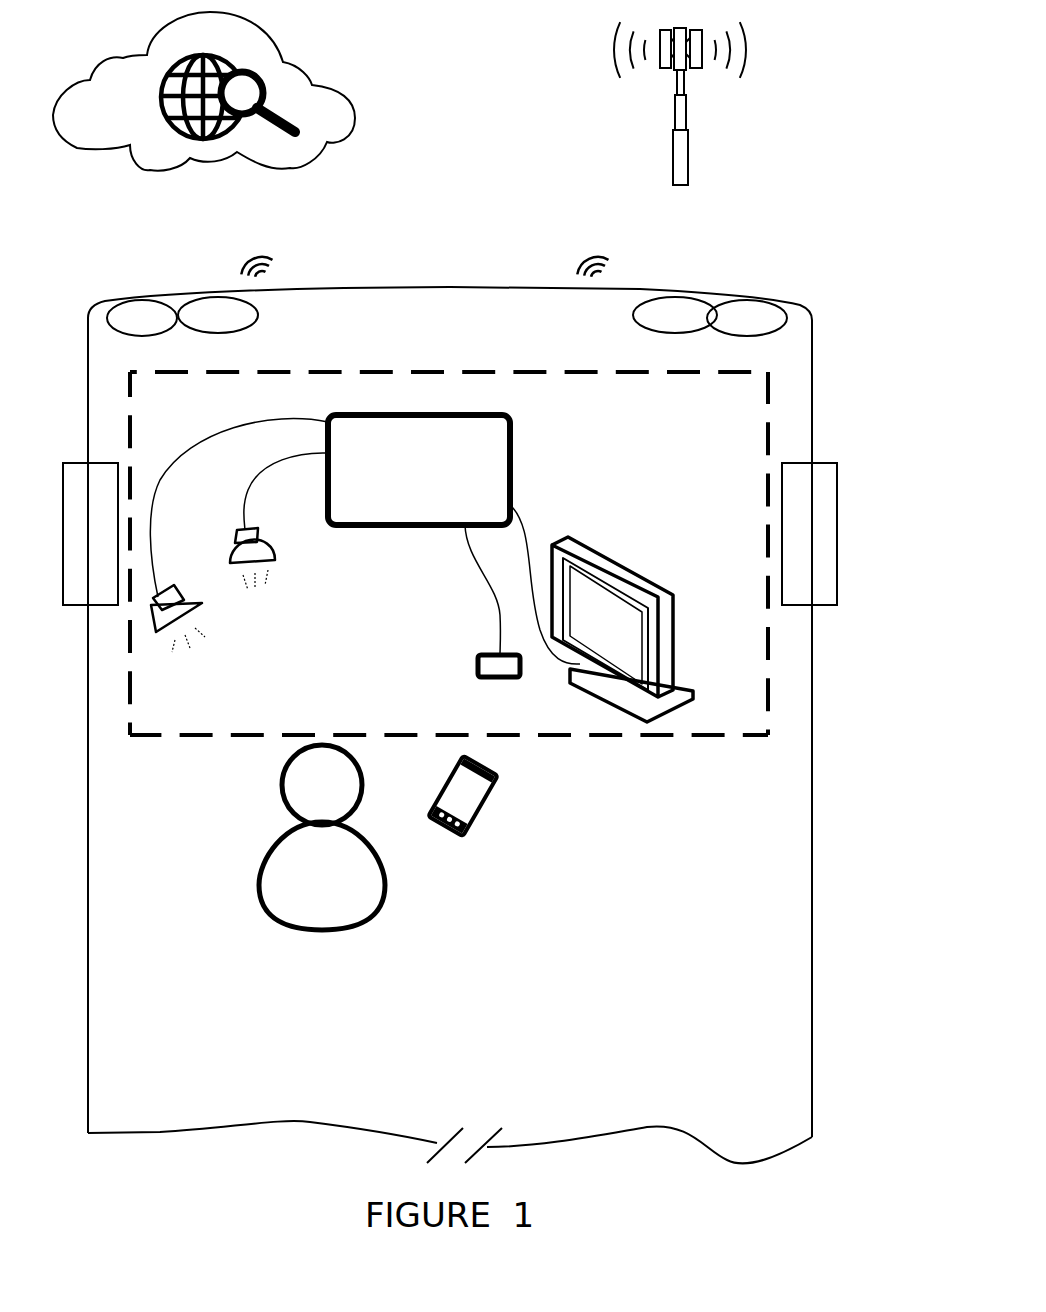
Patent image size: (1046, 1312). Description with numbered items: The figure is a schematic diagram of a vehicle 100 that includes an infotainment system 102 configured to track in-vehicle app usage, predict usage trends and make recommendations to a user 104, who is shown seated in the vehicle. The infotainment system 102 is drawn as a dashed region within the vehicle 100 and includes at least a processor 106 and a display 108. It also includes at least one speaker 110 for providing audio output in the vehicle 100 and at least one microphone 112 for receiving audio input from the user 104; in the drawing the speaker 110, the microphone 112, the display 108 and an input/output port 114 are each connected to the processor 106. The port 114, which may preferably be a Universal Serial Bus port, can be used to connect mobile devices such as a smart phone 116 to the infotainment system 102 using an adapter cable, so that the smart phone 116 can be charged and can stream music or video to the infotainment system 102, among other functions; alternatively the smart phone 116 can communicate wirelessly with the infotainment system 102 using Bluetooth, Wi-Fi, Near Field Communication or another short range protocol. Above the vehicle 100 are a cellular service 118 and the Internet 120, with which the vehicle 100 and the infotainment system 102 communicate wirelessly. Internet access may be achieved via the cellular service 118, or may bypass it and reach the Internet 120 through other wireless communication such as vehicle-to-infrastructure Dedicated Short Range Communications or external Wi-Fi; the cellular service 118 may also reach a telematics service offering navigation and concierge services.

The vehicle 100 is at (447, 287).
The infotainment system 102 is at (694, 740).
The user 104 is at (322, 837).
The processor 106 is at (365, 539).
The display 108 is at (622, 557).
The speaker 110 is at (184, 590).
The microphone 112 is at (277, 555).
The input/output port 114 is at (478, 664).
The smart phone 116 is at (488, 800).
The cellular service 118 is at (672, 165).
The Internet 120 is at (310, 78).